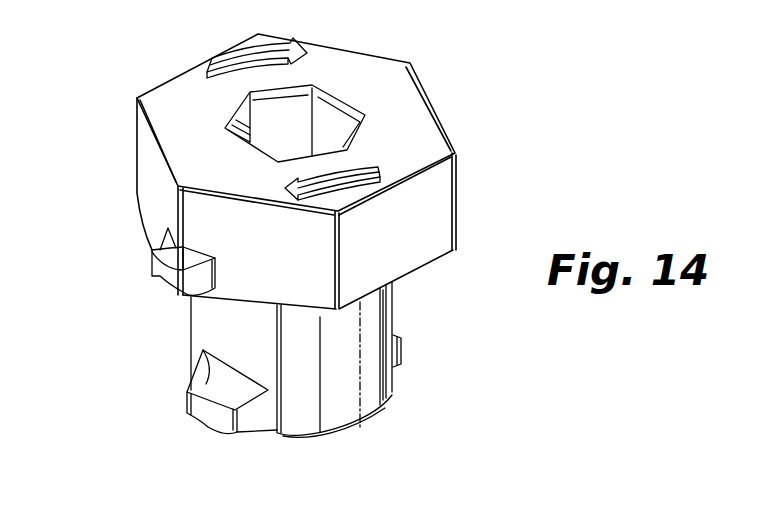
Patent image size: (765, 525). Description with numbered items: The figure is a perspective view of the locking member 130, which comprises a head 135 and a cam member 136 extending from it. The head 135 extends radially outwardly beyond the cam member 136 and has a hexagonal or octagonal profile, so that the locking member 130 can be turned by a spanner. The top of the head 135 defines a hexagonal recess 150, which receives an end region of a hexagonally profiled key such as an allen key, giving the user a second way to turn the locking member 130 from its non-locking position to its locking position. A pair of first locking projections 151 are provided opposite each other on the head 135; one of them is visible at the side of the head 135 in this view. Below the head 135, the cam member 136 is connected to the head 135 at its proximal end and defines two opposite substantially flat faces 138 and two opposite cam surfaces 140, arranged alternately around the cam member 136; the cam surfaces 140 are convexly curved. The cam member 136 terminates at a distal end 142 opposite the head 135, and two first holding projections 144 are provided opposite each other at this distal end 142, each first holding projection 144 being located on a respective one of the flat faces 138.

The locking member 130 is at (128, 227).
The head 135 is at (187, 110).
The hexagonal recess 150 is at (290, 120).
The first locking projections 151 is at (165, 272).
The cam member 136 is at (348, 358).
The flat faces 138 is at (210, 325).
The cam surfaces 140 is at (372, 327).
The distal end 142 is at (312, 443).
The first holding projections 144 is at (220, 438).